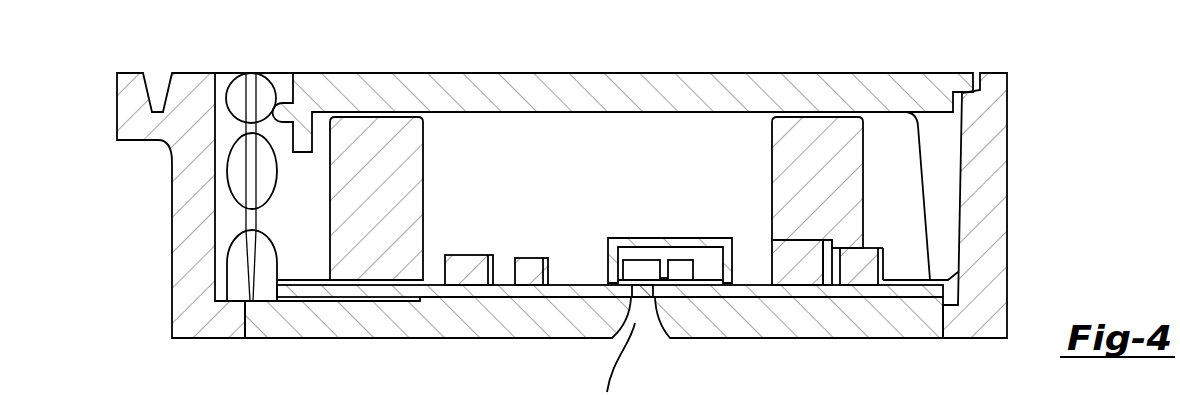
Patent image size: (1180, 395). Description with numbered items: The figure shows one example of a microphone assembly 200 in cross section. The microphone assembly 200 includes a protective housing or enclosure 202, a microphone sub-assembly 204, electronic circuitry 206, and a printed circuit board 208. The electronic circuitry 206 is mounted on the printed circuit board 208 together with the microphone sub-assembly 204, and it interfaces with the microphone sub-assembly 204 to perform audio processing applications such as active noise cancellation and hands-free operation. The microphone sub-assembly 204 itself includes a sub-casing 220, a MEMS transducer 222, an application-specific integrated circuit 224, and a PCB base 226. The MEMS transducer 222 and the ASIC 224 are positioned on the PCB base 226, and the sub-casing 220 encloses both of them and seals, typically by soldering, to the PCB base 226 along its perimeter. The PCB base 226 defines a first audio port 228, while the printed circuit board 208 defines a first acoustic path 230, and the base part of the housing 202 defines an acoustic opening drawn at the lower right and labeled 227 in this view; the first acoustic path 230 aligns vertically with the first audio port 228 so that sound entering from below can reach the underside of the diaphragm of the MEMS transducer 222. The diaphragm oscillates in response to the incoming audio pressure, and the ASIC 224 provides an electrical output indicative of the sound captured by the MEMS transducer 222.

The microphone assembly 200 is at (388, 48).
The protective housing 202 is at (710, 72).
The microphone sub-assembly 204 is at (690, 214).
The electronic circuitry 206 is at (463, 242).
The printed circuit board 208 is at (567, 283).
The sub-casing 220 is at (730, 238).
The MEMS transducer 222 is at (645, 272).
The application-specific integrated circuit 224 is at (683, 262).
The PCB base 226 is at (710, 276).
The housing base 227 is at (930, 316).
The first audio port 228 is at (657, 276).
The first acoustic path 230 is at (633, 288).